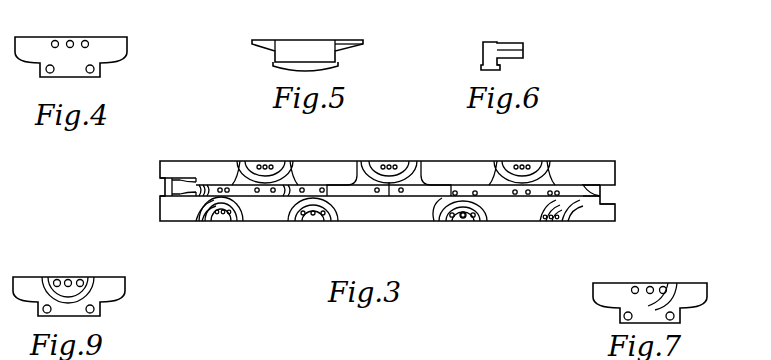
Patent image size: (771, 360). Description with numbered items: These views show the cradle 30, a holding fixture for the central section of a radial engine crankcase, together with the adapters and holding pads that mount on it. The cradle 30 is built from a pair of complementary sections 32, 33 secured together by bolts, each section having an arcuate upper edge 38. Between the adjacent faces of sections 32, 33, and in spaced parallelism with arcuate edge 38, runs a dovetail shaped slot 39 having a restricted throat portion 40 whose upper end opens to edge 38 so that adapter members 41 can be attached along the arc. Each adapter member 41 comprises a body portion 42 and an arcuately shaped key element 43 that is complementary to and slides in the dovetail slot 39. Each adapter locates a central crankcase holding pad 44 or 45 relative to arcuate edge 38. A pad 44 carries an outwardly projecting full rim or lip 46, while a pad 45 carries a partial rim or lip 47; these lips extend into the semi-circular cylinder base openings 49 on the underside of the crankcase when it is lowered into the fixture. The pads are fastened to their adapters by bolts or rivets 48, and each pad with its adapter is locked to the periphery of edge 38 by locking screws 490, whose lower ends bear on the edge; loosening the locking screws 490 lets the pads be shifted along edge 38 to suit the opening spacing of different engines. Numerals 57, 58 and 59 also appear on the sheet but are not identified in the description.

In FIG. 3, the cradle 30 is at (567, 172).
In FIG. 3, the complementary section 32 is at (608, 172).
In FIG. 3, the complementary section 33 is at (615, 215).
In FIG. 3, the arcuate upper edge 38 is at (217, 170).
In FIG. 3, the dovetail shaped slot 39 is at (605, 196).
In FIG. 3, the restricted throat portion 40 is at (597, 192).
In FIG. 4, the adapter member 41 is at (105, 52).
In FIG. 5, the adapter member 41 is at (302, 50).
In FIG. 6, the adapter member 41 is at (483, 48).
In FIG. 5, the body portion 42 is at (342, 43).
In FIG. 6, the body portion 42 is at (523, 45).
In FIG. 5, the arcuately shaped key element 43 is at (340, 64).
In FIG. 6, the arcuately shaped key element 43 is at (500, 68).
In FIG. 3, the central crankcase holding pad 44 is at (418, 168).
In FIG. 9, the central crankcase holding pad 44 is at (102, 283).
In FIG. 3, the central crankcase holding pad 45 is at (283, 190).
In FIG. 7, the central crankcase holding pad 45 is at (683, 290).
In FIG. 3, the rim or lip 46 is at (389, 196).
In FIG. 9, the rim or lip 46 is at (97, 292).
In FIG. 3, the partial rim or lip 47 is at (205, 220).
In FIG. 7, the partial rim or lip 47 is at (680, 295).
In FIG. 3, the bolts or rivets 48 is at (448, 220).
In FIG. 3, the cylinder base opening 49 is at (463, 220).
In FIG. 3, the locking screw 490 is at (323, 188).
In FIG. 3, the element 57 is at (338, 359).
In FIG. 3, the element 58 is at (370, 359).
In FIG. 3, the element 59 is at (266, 352).